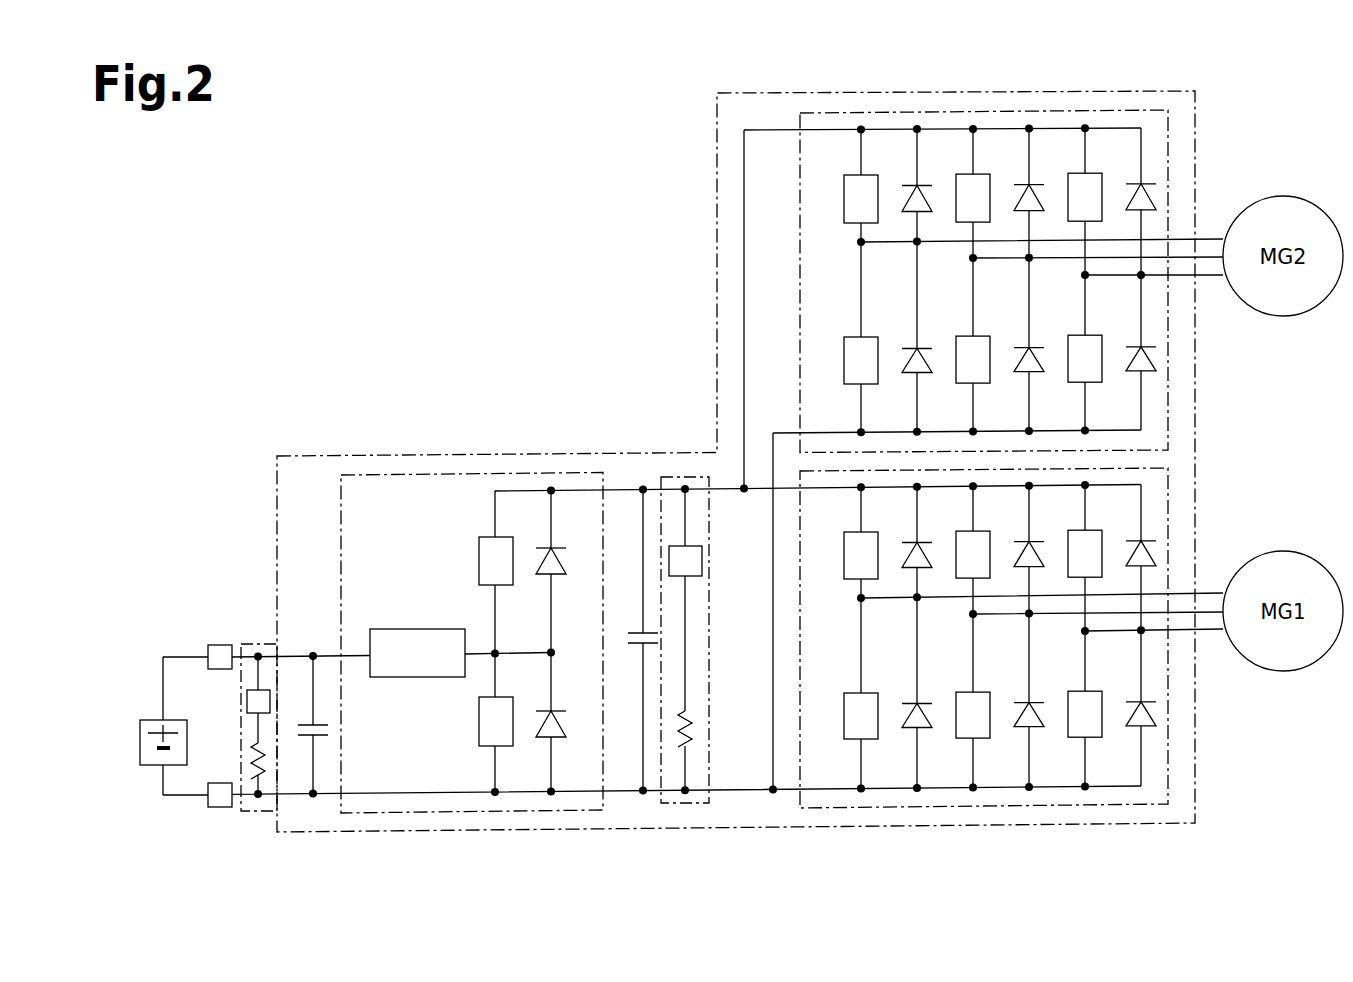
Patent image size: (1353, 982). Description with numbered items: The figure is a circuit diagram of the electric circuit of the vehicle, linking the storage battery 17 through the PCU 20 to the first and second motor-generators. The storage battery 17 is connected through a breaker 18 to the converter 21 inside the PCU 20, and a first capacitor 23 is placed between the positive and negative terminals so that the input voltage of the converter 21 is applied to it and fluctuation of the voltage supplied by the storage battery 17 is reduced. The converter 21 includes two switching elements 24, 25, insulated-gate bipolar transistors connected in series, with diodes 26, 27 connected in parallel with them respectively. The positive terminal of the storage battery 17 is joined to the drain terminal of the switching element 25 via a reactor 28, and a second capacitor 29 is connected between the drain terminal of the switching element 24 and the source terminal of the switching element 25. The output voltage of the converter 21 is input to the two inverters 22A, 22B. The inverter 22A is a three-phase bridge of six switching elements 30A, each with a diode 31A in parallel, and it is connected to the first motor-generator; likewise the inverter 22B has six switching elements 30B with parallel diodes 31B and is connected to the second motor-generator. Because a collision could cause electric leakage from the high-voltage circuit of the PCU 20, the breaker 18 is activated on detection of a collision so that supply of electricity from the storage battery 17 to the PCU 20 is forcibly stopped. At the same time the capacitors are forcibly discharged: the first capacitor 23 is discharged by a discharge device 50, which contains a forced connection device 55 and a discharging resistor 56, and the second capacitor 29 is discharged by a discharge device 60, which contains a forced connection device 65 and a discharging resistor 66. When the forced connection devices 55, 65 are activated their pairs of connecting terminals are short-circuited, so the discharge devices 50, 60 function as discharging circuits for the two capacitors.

The storage battery 17 is at (145, 720).
The breaker 18 is at (219, 644).
The PCU 20 is at (997, 93).
The converter 21 is at (438, 814).
The inverter 22A is at (995, 805).
The inverter 22B is at (1060, 111).
The first capacitor 23 is at (327, 723).
The switching element 24 is at (479, 543).
The switching element 25 is at (479, 719).
The diode 26 is at (559, 547).
The diode 27 is at (559, 710).
The reactor 28 is at (409, 629).
The second capacitor 29 is at (633, 632).
The switching element 30A is at (1070, 689).
The switching element 30B is at (1070, 333).
The diode 31A is at (1125, 701).
The diode 31B is at (1125, 345).
The discharge device 50 is at (260, 643).
The forced connection device 55 is at (247, 702).
The discharging resistor 56 is at (252, 760).
The discharge device 60 is at (687, 477).
The forced connection device 65 is at (702, 558).
The discharging resistor 66 is at (702, 720).